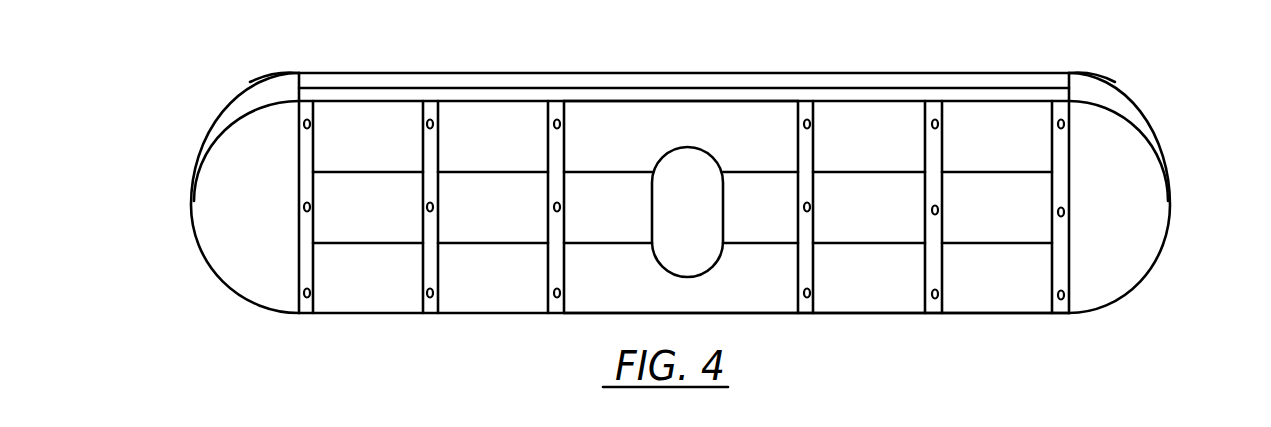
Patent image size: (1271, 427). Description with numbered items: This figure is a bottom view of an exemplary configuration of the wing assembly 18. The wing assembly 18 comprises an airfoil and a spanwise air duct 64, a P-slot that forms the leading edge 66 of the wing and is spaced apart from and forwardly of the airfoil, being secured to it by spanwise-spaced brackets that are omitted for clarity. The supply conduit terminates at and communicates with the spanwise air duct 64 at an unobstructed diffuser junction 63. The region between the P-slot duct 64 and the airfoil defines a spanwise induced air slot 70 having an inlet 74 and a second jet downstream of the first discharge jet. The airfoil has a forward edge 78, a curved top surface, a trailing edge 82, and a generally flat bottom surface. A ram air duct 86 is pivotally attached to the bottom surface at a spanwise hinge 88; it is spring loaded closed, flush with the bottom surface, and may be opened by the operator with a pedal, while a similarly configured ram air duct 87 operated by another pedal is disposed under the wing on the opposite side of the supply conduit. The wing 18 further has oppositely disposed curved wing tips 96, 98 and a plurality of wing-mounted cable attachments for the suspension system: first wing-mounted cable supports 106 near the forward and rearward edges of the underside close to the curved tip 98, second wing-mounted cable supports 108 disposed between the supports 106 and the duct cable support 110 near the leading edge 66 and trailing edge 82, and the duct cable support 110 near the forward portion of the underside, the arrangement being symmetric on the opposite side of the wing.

The wing assembly 18 is at (414, 333).
The diffuser junction 63 is at (716, 166).
The spanwise air duct 64 is at (1078, 82).
The leading edge 66 is at (313, 73).
The induced air slot 70 is at (518, 92).
The inlet 74 is at (400, 88).
The forward edge 78 is at (743, 103).
The trailing edge 82 is at (828, 316).
The ram air duct 86 is at (627, 233).
The ram air duct 87 is at (900, 230).
The spanwise hinge 88 is at (743, 247).
The curved wing tip 96 is at (203, 222).
The curved wing tip 98 is at (1162, 225).
The first wing-mounted cable support 106 is at (309, 127).
The second wing-mounted cable support 108 is at (432, 127).
The wing-mounted duct cable support 110 is at (559, 127).